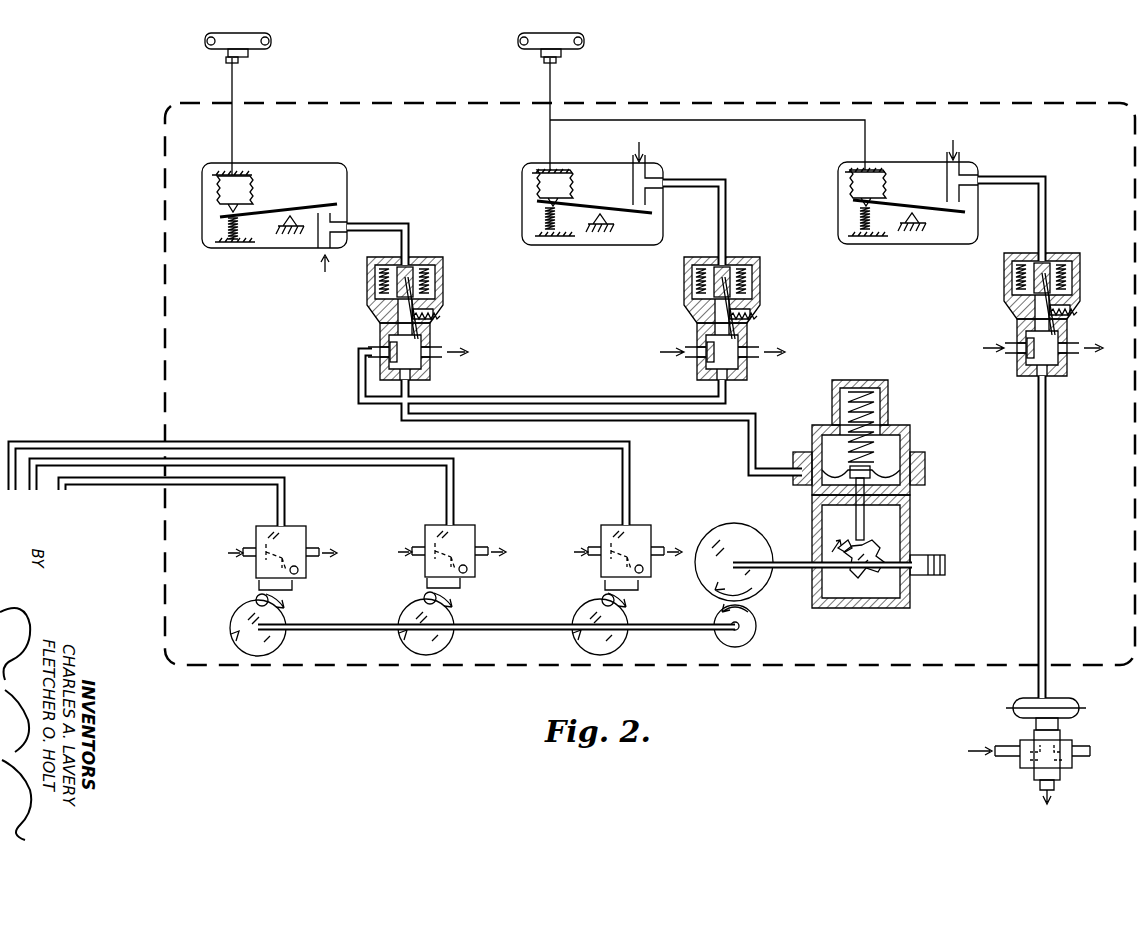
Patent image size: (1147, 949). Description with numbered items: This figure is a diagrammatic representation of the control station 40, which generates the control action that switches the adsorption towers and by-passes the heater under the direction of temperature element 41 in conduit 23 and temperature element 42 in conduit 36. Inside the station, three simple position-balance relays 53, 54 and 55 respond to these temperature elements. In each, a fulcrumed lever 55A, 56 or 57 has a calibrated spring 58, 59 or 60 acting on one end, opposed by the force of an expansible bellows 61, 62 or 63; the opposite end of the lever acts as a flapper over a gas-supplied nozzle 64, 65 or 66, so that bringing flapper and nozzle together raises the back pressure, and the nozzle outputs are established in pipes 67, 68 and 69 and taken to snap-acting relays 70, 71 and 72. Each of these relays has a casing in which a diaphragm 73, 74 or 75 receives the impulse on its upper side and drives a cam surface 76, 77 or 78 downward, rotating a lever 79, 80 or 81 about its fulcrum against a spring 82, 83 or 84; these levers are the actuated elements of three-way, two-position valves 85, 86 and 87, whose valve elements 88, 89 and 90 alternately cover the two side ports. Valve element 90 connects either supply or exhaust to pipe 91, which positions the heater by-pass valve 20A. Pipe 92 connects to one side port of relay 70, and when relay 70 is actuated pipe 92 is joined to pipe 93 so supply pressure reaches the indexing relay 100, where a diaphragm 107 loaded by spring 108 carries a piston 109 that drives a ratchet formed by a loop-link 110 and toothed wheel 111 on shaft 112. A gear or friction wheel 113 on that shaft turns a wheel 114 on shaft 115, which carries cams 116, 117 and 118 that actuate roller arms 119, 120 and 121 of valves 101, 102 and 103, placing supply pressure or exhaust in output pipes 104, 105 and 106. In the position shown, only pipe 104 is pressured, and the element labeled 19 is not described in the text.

The conduit 36 is at (255, 50).
The temperature element 42 is at (238, 62).
The conduit 23 is at (571, 50).
The temperature element 41 is at (556, 62).
The bellows 61 is at (216, 188).
The fulcrumed lever 55A is at (278, 208).
The calibrated spring 58 is at (228, 225).
The relay 53 is at (266, 250).
The gas-supplied nozzle 64 is at (318, 238).
The pipe 67 is at (367, 226).
The bellows 62 is at (536, 182).
The fulcrumed lever 56 is at (575, 208).
The calibrated spring 59 is at (545, 223).
The relay 54 is at (608, 247).
The gas-supplied nozzle 65 is at (632, 165).
The pipe 68 is at (680, 180).
The bellows 63 is at (849, 182).
The fulcrumed lever 57 is at (888, 206).
The calibrated spring 60 is at (860, 220).
The relay 55 is at (920, 245).
The gas-supplied nozzle 66 is at (946, 162).
The pipe 69 is at (1000, 178).
The snap-acting relay 70 is at (486, 310).
The diaphragm 73 is at (416, 282).
The cam surface 76 is at (432, 296).
The lever 79 is at (397, 310).
The spring 82 is at (442, 318).
The three-way, two-position valve 85 is at (432, 372).
The valve element 88 is at (397, 368).
The snap-acting relay 71 is at (801, 308).
The diaphragm 74 is at (733, 282).
The cam surface 77 is at (749, 294).
The lever 80 is at (714, 310).
The spring 83 is at (759, 318).
The three-way, two-position valve 86 is at (749, 372).
The valve element 89 is at (709, 366).
The snap-acting relay 72 is at (1122, 310).
The diaphragm 75 is at (1053, 280).
The cam surface 78 is at (1069, 290).
The lever 81 is at (1034, 306).
The spring 84 is at (1079, 314).
The three-way, two-position valve 87 is at (1069, 370).
The valve element 90 is at (1029, 362).
The pipe 92 is at (537, 398).
The pipe 93 is at (698, 420).
The pipe 91 is at (1047, 512).
The output pipe 104 is at (12, 440).
The output pipe 105 is at (33, 492).
The output pipe 106 is at (75, 492).
The three-way, two-position valve 101 is at (292, 527).
The three-way, two-position valve 102 is at (462, 526).
The three-way, two-position valve 103 is at (638, 526).
The roller arm 119 is at (258, 584).
The roller arm 120 is at (426, 583).
The roller arm 121 is at (604, 584).
The cam 116 is at (283, 642).
The cam 117 is at (444, 641).
The cam 118 is at (626, 642).
The shaft 115 is at (478, 624).
The gear or friction wheel 114 is at (753, 638).
The gear or friction wheel 113 is at (728, 523).
The shaft 112 is at (790, 572).
The spring 108 is at (886, 413).
The diaphragm 107 is at (912, 483).
The indexing relay 100 is at (912, 519).
The piston 109 is at (862, 538).
The loop-link 110 is at (848, 541).
The toothed wheel 111 is at (882, 551).
The control station 40 is at (843, 665).
The heater by-pass valve 20A is at (1076, 700).
The heater water valve 19 is at (1014, 744).